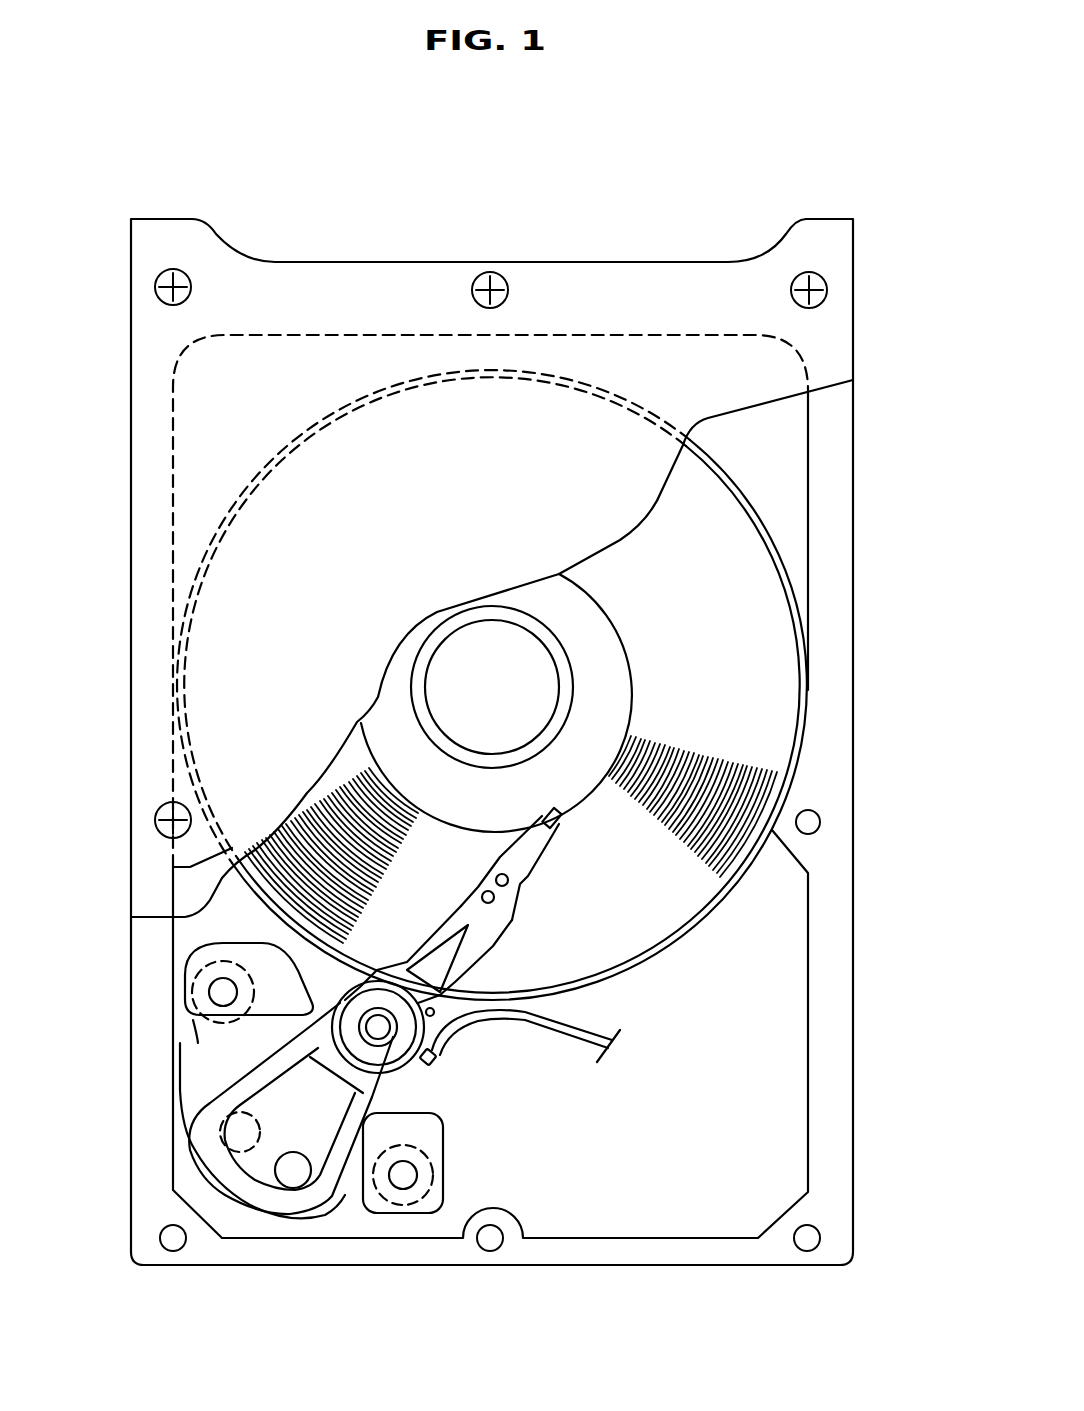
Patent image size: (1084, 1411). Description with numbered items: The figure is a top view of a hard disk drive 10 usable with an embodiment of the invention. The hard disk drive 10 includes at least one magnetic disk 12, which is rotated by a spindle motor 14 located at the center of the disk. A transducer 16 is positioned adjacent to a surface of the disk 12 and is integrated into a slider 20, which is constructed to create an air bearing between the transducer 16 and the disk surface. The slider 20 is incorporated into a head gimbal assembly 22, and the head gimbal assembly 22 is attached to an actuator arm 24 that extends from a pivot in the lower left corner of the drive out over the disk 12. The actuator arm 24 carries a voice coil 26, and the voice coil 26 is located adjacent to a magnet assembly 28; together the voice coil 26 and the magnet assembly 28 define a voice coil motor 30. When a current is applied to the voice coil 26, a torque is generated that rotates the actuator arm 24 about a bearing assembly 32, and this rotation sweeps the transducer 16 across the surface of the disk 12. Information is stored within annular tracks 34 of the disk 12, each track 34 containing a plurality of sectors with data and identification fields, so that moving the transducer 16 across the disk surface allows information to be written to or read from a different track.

The hard disk drive 10 is at (633, 182).
The magnetic disk 12 is at (758, 621).
The spindle motor 14 is at (467, 662).
The transducer 16 is at (562, 824).
The slider 20 is at (540, 840).
The head gimbal assembly 22 is at (488, 939).
The actuator arm 24 is at (285, 1045).
The voice coil 26 is at (218, 1124).
The magnet assembly 28 is at (222, 1060).
The voice coil motor 30 is at (347, 1192).
The bearing assembly 32 is at (393, 1038).
The annular tracks 34 is at (340, 813).